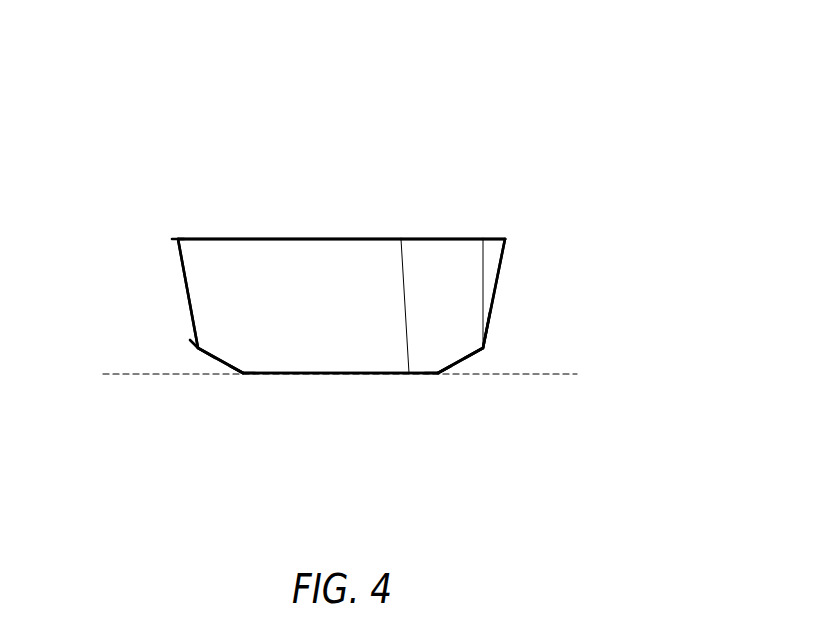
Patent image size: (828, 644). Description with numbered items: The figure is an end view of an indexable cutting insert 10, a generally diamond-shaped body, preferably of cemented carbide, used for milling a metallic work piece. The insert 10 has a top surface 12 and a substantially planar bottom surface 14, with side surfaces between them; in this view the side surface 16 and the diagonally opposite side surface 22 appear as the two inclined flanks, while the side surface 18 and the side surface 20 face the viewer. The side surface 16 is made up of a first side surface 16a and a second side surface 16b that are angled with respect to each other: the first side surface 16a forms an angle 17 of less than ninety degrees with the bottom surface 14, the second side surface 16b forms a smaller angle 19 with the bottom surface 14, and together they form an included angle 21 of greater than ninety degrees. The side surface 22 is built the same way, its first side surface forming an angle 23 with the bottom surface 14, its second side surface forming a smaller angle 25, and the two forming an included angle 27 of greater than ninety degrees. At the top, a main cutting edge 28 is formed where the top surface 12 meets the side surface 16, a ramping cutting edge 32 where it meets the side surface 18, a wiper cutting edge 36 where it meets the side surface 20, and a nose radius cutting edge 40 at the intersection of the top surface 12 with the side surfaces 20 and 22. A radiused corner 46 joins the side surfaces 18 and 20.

The indexable cutting insert 10 is at (124, 91).
The top surface 12 is at (300, 205).
The bottom surface 14 is at (304, 388).
The side surface 16 is at (140, 296).
The first side surface 16a is at (178, 255).
The second side surface 16b is at (203, 352).
The angle 17 is at (180, 300).
The side surface 18 is at (325, 355).
The angle 19 is at (224, 382).
The side surface 20 is at (472, 357).
The included angle 21 is at (204, 321).
The side surface 22 is at (514, 283).
The angle 23 is at (502, 300).
The angle 25 is at (456, 383).
The included angle 27 is at (477, 326).
The main cutting edge 28 is at (177, 238).
The ramping cutting edge 32 is at (266, 238).
The wiper cutting edge 36 is at (448, 239).
The nose radius cutting edge 40 is at (495, 248).
The radiused corner 46 is at (395, 247).